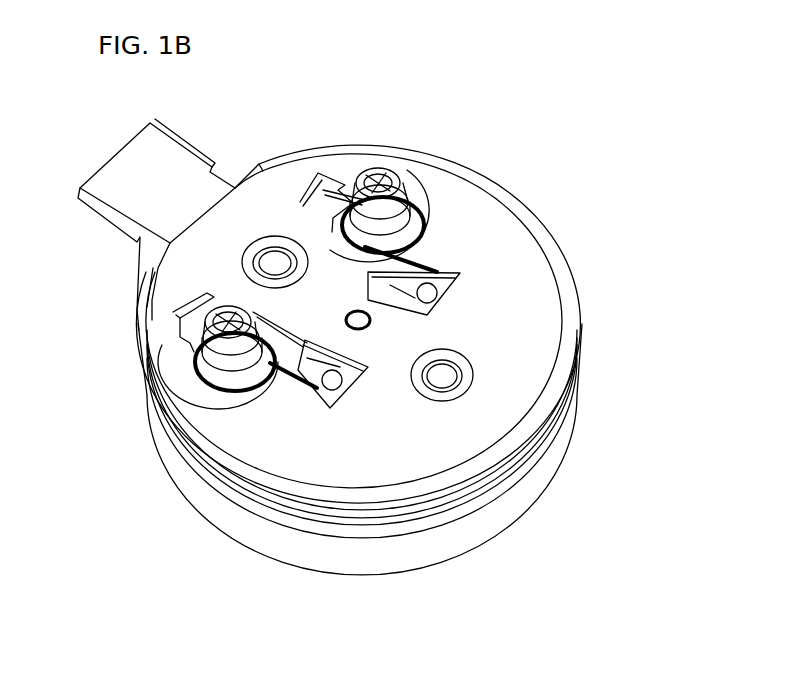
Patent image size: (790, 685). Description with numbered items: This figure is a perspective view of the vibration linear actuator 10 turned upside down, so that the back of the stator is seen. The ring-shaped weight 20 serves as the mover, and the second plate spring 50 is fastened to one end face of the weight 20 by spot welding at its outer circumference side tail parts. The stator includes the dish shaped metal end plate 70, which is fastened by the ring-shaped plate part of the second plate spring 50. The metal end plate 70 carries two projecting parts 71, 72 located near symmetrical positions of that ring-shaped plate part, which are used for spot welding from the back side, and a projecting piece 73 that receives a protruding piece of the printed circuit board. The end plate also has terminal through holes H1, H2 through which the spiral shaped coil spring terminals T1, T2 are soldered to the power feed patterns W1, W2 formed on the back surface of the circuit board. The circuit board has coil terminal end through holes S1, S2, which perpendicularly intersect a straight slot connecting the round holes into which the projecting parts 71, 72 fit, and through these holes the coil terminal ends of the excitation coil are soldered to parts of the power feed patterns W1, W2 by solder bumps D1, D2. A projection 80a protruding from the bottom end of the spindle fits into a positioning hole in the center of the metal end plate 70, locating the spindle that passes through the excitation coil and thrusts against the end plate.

The vibration linear actuator 10 is at (121, 106).
The ring-shaped weight 20 is at (480, 530).
The second plate spring 50 is at (538, 463).
The metal end plate 70 is at (532, 213).
The projecting part 71 is at (447, 377).
The projecting part 72 is at (145, 300).
The projecting piece 73 is at (157, 167).
The projection 80a is at (360, 327).
The coil spring terminal T1 is at (215, 332).
The coil spring terminal T2 is at (381, 183).
The terminal through hole H1 is at (213, 397).
The terminal through hole H2 is at (428, 190).
The power feed pattern W1 is at (260, 397).
The power feed pattern W2 is at (422, 226).
The coil terminal end through hole S1 is at (302, 390).
The coil terminal end through hole S2 is at (385, 306).
The solder bump D1 is at (337, 400).
The solder bump D2 is at (432, 288).